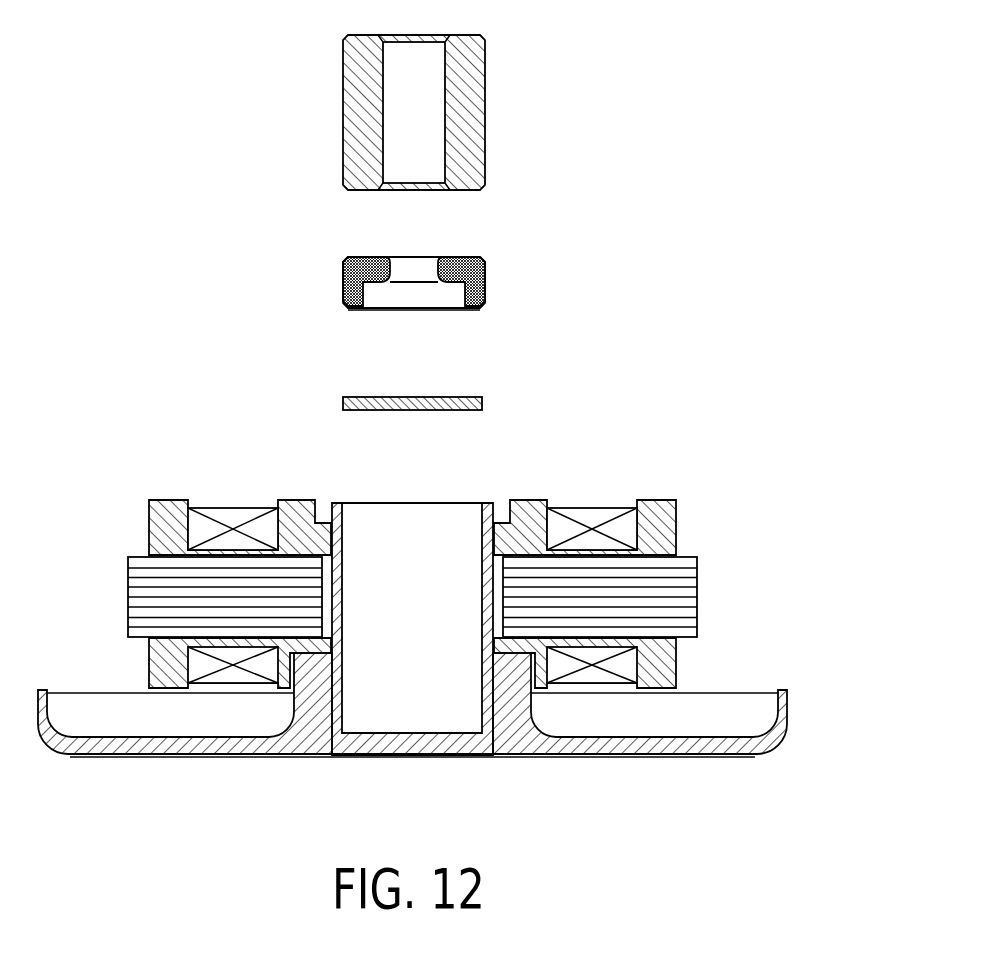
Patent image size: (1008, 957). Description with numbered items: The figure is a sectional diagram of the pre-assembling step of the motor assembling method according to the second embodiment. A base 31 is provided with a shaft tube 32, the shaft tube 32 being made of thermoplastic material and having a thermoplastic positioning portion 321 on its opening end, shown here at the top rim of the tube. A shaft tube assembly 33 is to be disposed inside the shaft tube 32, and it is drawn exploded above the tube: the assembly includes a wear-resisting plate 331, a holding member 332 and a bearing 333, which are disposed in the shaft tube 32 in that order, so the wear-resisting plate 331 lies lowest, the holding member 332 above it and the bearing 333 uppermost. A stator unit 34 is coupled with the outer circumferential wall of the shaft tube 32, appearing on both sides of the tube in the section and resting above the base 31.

The base 31 is at (705, 745).
The shaft tube 32 is at (493, 603).
The thermoplastic positioning portion 321 is at (488, 503).
The shaft tube assembly 33 is at (526, 222).
The wear-resisting plate 331 is at (482, 347).
The holding member 332 is at (476, 257).
The bearing 333 is at (470, 143).
The stator unit 34 is at (709, 519).